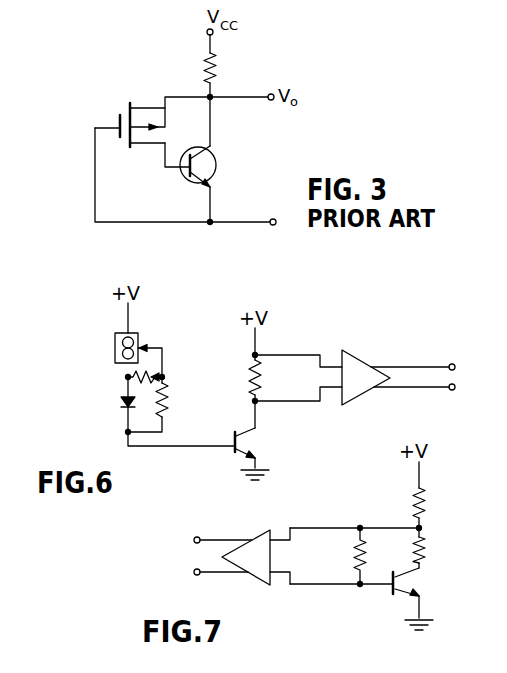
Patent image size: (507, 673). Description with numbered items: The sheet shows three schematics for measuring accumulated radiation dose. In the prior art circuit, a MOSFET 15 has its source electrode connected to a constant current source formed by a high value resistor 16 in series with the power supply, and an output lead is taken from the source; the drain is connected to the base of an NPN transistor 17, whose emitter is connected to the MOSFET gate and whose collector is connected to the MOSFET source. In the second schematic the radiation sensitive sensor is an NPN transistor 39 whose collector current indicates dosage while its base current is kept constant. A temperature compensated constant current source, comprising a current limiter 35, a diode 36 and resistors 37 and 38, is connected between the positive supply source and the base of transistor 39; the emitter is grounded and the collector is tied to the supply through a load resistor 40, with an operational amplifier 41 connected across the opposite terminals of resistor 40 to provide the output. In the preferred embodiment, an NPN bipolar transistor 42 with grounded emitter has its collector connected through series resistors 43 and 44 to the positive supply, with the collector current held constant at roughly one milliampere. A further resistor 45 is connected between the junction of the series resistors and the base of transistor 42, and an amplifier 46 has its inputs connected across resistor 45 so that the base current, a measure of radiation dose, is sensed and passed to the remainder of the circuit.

In FIG. 3, the MOSFET 15 is at (120, 122).
In FIG. 3, the high value resistor 16 is at (214, 68).
In FIG. 3, the NPN transistor 17 is at (198, 180).
In FIG. 6, the current limiter 35 is at (115, 343).
In FIG. 6, the diode 36 is at (120, 406).
In FIG. 6, the resistor 37 is at (157, 377).
In FIG. 6, the resistor 38 is at (168, 405).
In FIG. 6, the NPN transistor 39 is at (229, 449).
In FIG. 6, the load resistor 40 is at (252, 383).
In FIG. 6, the operational amplifier 41 is at (372, 362).
In FIG. 7, the NPN bipolar transistor 42 is at (393, 590).
In FIG. 7, the resistor 43 is at (425, 548).
In FIG. 7, the resistor 44 is at (425, 505).
In FIG. 7, the resistor 45 is at (355, 555).
In FIG. 7, the amplifier 46 is at (257, 536).